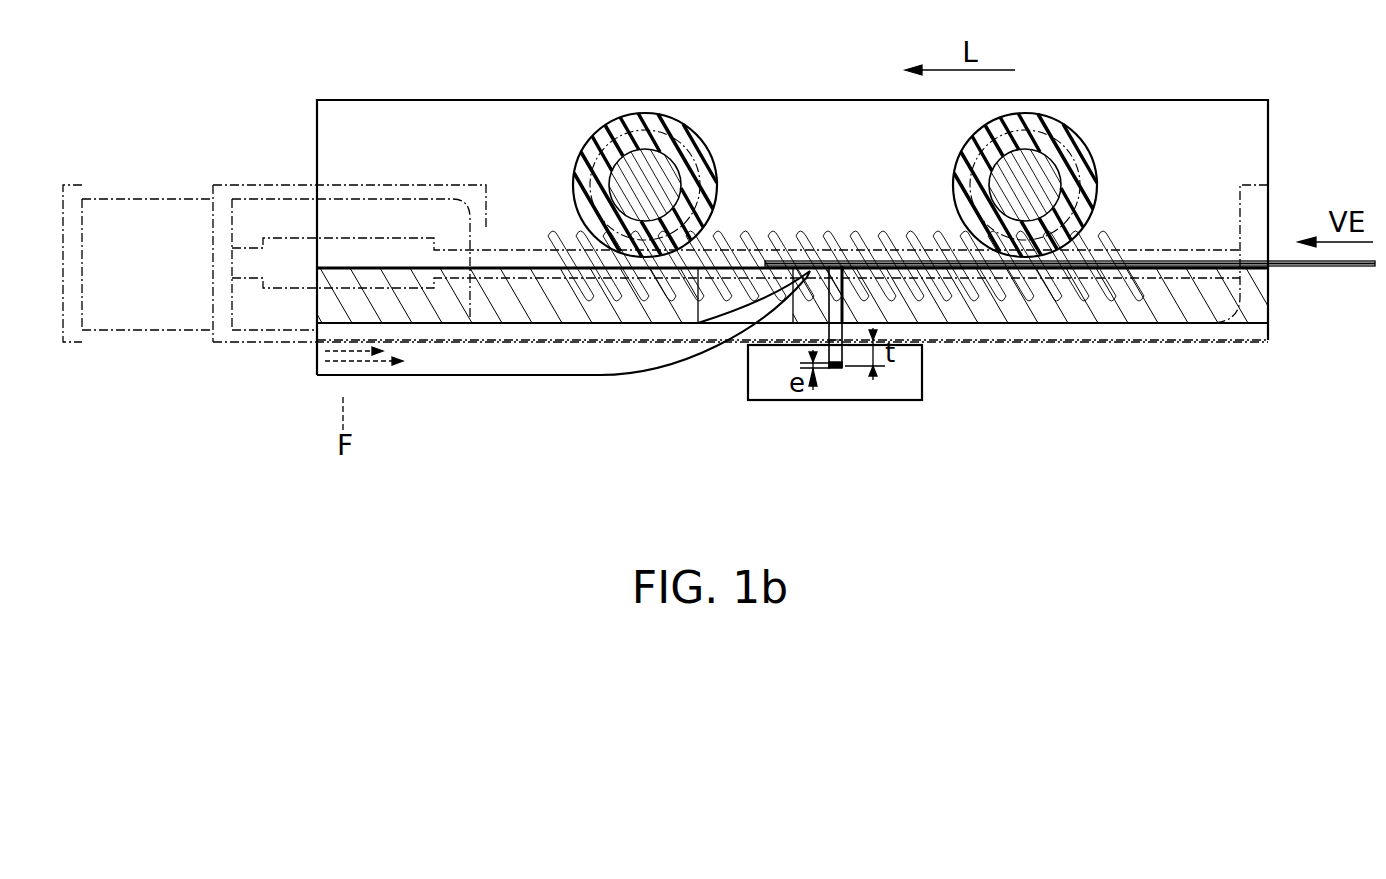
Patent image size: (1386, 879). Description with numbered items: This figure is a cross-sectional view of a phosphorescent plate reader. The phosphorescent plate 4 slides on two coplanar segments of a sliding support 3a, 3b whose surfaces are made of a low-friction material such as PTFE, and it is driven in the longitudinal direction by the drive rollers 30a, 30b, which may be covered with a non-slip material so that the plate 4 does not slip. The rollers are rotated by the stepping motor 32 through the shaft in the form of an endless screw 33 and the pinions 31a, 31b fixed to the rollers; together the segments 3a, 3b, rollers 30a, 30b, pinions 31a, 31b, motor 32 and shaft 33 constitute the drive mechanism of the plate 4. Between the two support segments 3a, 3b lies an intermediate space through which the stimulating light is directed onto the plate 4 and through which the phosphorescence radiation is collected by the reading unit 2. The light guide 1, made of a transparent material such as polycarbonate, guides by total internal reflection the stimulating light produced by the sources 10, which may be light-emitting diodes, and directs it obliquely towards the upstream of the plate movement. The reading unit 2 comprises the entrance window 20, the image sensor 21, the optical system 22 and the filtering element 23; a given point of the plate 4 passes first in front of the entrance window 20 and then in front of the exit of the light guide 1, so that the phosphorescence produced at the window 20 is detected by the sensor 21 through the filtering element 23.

The light guide 1 is at (447, 372).
The reading unit 2 is at (835, 443).
The segment of sliding support 3a is at (1100, 324).
The segment of sliding support 3b is at (572, 325).
The phosphorescent plate 4 is at (1318, 268).
The sources of stimulating light 10 is at (315, 352).
The entrance window of the reading unit 20 is at (835, 248).
The image sensor 21 is at (782, 385).
The optical system 22 is at (841, 348).
The filtering element 23 is at (836, 363).
The drive roller 30a is at (1075, 140).
The drive roller 30b is at (700, 135).
The pinion fixed to the drive roller 31a is at (1092, 170).
The pinion fixed to the drive roller 31b is at (588, 148).
The stepping motor 32 is at (157, 332).
The shaft in the form of an endless screw 33 is at (833, 228).